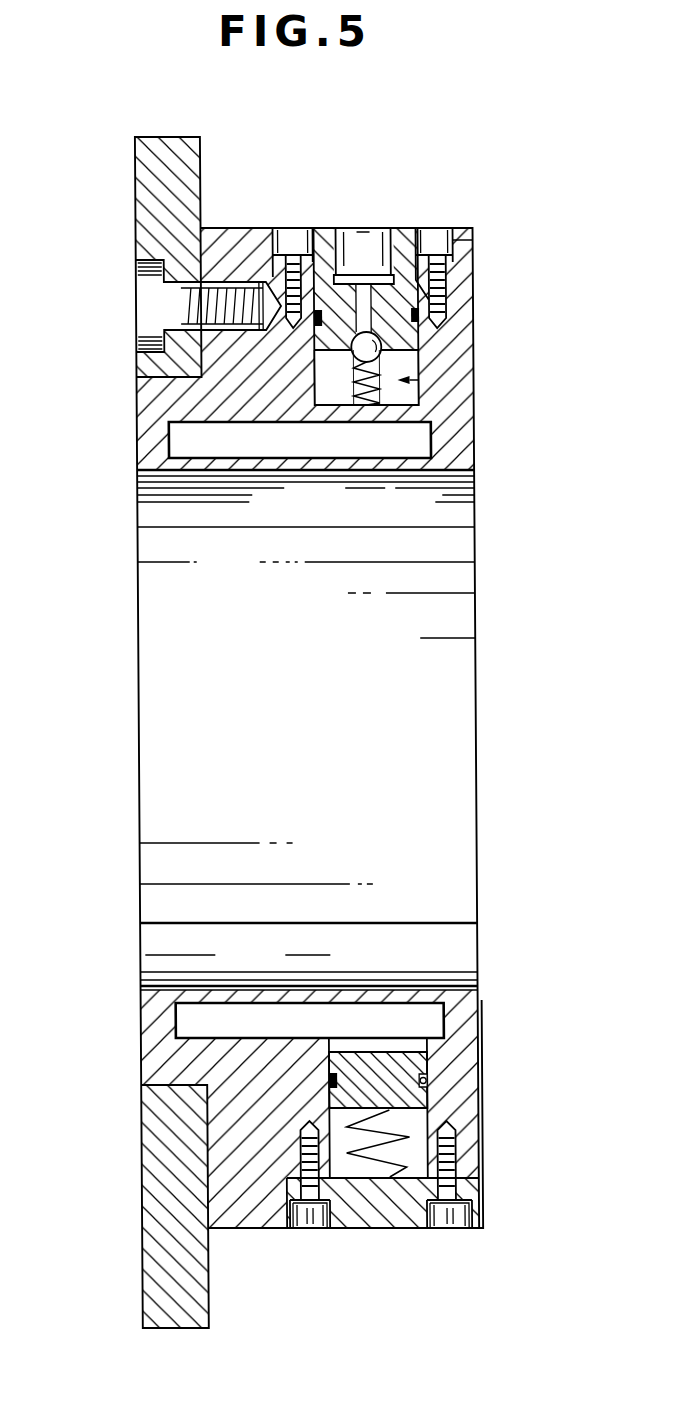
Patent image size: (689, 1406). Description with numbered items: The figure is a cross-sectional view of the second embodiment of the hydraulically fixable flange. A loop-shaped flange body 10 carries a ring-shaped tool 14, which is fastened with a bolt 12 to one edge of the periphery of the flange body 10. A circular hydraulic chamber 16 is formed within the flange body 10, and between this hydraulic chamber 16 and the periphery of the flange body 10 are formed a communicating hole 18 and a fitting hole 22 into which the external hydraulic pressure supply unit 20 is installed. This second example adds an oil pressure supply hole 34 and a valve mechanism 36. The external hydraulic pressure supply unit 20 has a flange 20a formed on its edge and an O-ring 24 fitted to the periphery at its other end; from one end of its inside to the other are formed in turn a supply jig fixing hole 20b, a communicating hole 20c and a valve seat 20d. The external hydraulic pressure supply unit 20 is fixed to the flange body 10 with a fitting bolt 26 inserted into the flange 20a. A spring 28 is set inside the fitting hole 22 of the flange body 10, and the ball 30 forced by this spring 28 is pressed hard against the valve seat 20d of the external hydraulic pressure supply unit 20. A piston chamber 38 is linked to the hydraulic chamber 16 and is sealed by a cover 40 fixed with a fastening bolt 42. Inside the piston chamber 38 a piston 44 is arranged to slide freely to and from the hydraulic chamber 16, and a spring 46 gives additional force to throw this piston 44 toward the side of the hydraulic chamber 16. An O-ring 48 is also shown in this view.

The flange body 10 is at (226, 240).
The bolt 12 is at (143, 292).
The ring-shaped tool 14 is at (143, 163).
The hydraulic chamber 16 is at (241, 1010).
The communicating hole 18 is at (371, 402).
The external hydraulic pressure supply unit 20 is at (410, 245).
The flange 20a is at (457, 258).
The supply jig fixing hole 20b is at (358, 250).
The communicating hole 20c is at (404, 327).
The valve seat 20d is at (341, 398).
The fitting hole 22 is at (325, 398).
The O-ring 24 is at (417, 302).
The fitting bolt 26 is at (293, 240).
The spring 28 is at (404, 422).
The ball 30 is at (381, 347).
The oil pressure supply hole 34 is at (386, 215).
The valve mechanism 36 is at (404, 378).
The piston chamber 38 is at (357, 1040).
The cover plate 40 is at (381, 1222).
The fastening bolt 42 is at (301, 1222).
The piston 44 is at (409, 1062).
The spring 46 is at (399, 1137).
The O-ring 48 is at (419, 1080).